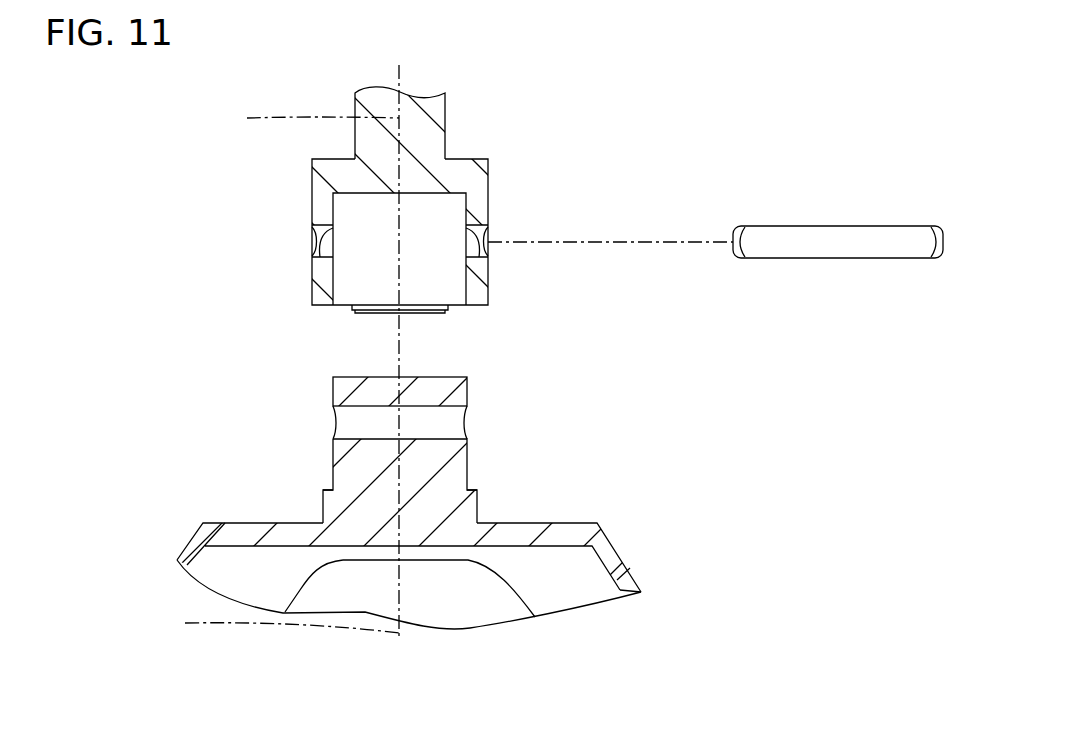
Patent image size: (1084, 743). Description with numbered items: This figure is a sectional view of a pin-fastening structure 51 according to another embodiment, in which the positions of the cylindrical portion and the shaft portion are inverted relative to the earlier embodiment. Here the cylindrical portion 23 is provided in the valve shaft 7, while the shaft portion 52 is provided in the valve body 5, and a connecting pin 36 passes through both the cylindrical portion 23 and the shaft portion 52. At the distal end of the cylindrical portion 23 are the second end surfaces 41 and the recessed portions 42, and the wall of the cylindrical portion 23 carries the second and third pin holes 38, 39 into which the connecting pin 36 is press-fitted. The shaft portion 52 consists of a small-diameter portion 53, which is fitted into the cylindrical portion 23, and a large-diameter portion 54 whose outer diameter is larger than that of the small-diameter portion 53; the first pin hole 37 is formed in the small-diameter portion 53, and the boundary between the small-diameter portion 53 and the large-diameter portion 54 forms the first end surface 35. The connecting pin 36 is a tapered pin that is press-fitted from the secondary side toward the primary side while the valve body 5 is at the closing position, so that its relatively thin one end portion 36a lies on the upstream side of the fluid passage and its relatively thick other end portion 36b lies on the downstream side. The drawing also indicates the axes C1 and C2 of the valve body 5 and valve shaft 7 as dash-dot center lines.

The pin-fastening structure 51 is at (146, 139).
The valve shaft 7 is at (451, 122).
The cylindrical portion 23 is at (312, 285).
The third pin hole 39 is at (312, 240).
The second pin hole 38 is at (488, 237).
The second end surface 41 is at (360, 313).
The recessed portion 42 is at (481, 308).
The connecting pin 36 is at (835, 226).
The one end portion 36a is at (745, 232).
The other end portion 36b is at (925, 232).
The shaft portion 52 is at (500, 371).
The small-diameter portion 53 is at (452, 390).
The large-diameter portion 54 is at (455, 477).
The first pin hole 37 is at (347, 435).
The first end surface 35 is at (328, 490).
The valve body 5 is at (191, 527).
The axis C1 is at (278, 627).
The axis C2 is at (306, 120).